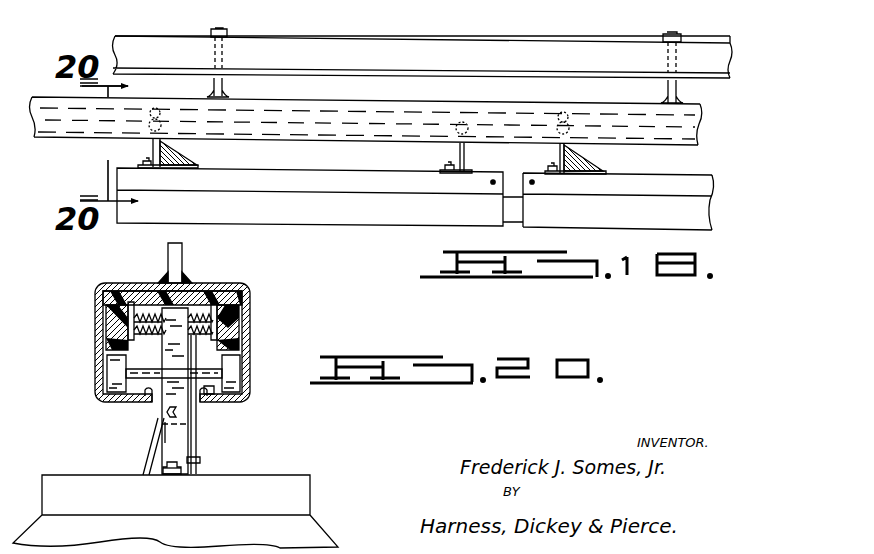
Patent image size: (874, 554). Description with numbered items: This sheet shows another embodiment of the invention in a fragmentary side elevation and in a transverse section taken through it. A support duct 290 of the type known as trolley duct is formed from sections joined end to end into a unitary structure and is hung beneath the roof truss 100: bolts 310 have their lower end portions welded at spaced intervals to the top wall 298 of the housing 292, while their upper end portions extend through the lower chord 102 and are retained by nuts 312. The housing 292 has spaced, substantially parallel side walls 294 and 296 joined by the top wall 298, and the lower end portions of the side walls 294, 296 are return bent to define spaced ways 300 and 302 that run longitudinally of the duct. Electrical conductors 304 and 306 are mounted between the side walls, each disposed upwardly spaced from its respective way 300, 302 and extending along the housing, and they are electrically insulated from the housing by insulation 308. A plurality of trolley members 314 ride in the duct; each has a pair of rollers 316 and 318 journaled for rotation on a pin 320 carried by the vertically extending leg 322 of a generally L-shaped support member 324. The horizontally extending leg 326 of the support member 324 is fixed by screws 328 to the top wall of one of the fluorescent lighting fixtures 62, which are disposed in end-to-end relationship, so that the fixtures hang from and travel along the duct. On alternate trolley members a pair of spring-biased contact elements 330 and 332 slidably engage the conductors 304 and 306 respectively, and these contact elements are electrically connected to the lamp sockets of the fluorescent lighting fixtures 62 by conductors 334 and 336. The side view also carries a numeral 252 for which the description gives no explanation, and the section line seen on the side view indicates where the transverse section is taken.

In FIG. 19, the roof truss 100 is at (176, 33).
In FIG. 19, the lower chord 102 is at (287, 49).
In FIG. 19, the nuts 312 is at (231, 34).
In FIG. 19, the intermediate rail member 252 is at (484, 0).
In FIG. 19, the bolts 310 is at (224, 85).
In FIG. 20, the bolts 310 is at (170, 245).
In FIG. 19, the trolley members 314 is at (149, 149).
In FIG. 19, the vertically extending leg 322 is at (183, 160).
In FIG. 20, the vertically extending leg 322 is at (163, 431).
In FIG. 19, the fluorescent lighting fixtures 62 is at (250, 216).
In FIG. 20, the fluorescent lighting fixtures 62 is at (300, 528).
In FIG. 20, the support duct 290 is at (256, 326).
In FIG. 20, the housing 292 is at (242, 373).
In FIG. 20, the side wall 294 is at (98, 345).
In FIG. 20, the side wall 296 is at (244, 320).
In FIG. 20, the top wall 298 is at (200, 290).
In FIG. 20, the way 300 is at (104, 396).
In FIG. 20, the way 302 is at (196, 400).
In FIG. 20, the electrical conductor 304 is at (112, 330).
In FIG. 20, the electrical conductor 306 is at (248, 310).
In FIG. 20, the insulation 308 is at (104, 300).
In FIG. 20, the roller 316 is at (114, 368).
In FIG. 20, the roller 318 is at (244, 387).
In FIG. 20, the pin 320 is at (231, 361).
In FIG. 20, the support member 324 is at (201, 460).
In FIG. 20, the horizontally extending leg 326 is at (166, 474).
In FIG. 20, the screws 328 is at (178, 473).
In FIG. 20, the spring-biased contact element 330 is at (146, 266).
In FIG. 20, the spring-biased contact element 332 is at (224, 310).
In FIG. 20, the conductor 334 is at (146, 457).
In FIG. 20, the conductor 336 is at (199, 443).